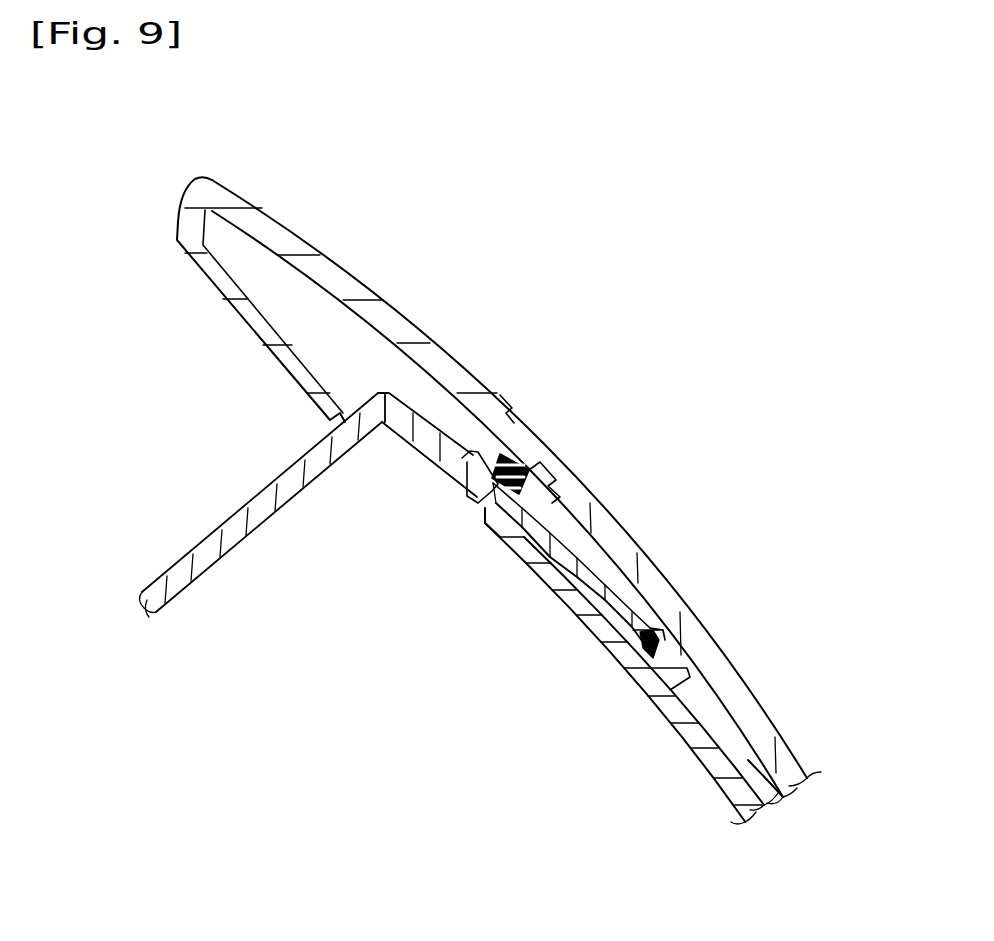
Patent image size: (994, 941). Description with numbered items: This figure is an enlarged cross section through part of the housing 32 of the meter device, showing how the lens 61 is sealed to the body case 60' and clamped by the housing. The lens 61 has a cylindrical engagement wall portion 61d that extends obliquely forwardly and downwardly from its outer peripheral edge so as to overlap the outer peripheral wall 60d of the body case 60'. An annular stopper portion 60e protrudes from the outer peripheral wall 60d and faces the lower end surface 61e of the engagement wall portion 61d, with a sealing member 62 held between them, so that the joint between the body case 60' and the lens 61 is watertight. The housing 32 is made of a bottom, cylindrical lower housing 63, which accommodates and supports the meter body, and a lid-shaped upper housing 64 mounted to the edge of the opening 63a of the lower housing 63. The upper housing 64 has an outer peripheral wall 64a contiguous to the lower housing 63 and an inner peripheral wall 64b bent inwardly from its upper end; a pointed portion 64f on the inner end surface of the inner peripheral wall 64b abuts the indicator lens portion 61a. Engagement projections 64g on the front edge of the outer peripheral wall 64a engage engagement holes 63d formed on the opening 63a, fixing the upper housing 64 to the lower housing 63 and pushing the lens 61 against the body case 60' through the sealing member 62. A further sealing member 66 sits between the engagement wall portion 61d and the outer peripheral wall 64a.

The housing 32 is at (320, 180).
The upper housing 64 is at (433, 330).
The outer peripheral wall 64a is at (363, 277).
The inner peripheral wall 64b is at (245, 330).
The lens 61 is at (186, 547).
The indicator lens portion 61a is at (148, 601).
The pointed portion 64f is at (325, 458).
The sealing member 66 is at (468, 462).
The opening 63a is at (505, 405).
The engagement hole 63d is at (542, 430).
The engagement projection 64g is at (548, 443).
The engagement wall portion 61d is at (600, 560).
The lower end surface 61e is at (665, 618).
The sealing member 62 is at (682, 630).
The stopper portion 60e is at (692, 670).
The lower housing 63 is at (790, 738).
The outer peripheral wall 60d is at (643, 695).
The body case 60' is at (631, 707).